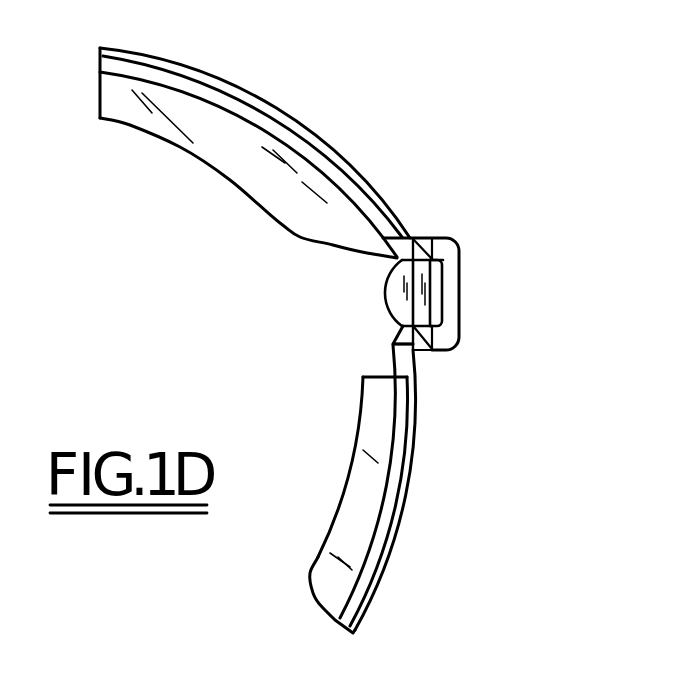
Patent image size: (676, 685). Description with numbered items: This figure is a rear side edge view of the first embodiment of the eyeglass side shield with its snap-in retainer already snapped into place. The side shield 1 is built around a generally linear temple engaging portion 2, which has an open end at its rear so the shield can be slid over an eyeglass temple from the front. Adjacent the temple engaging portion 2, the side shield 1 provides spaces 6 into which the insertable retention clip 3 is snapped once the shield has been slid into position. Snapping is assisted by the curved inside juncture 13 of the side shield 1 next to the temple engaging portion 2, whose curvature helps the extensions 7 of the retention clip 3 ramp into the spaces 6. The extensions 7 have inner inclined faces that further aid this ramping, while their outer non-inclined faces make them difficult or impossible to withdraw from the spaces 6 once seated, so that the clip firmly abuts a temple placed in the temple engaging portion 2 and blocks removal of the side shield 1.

The side shield 1 is at (365, 97).
The temple engaging portion 2 is at (468, 236).
The retention clip 3 is at (383, 293).
The spaces 6 is at (423, 228).
The extensions 7 is at (447, 237).
The curved inside juncture 13 is at (400, 342).